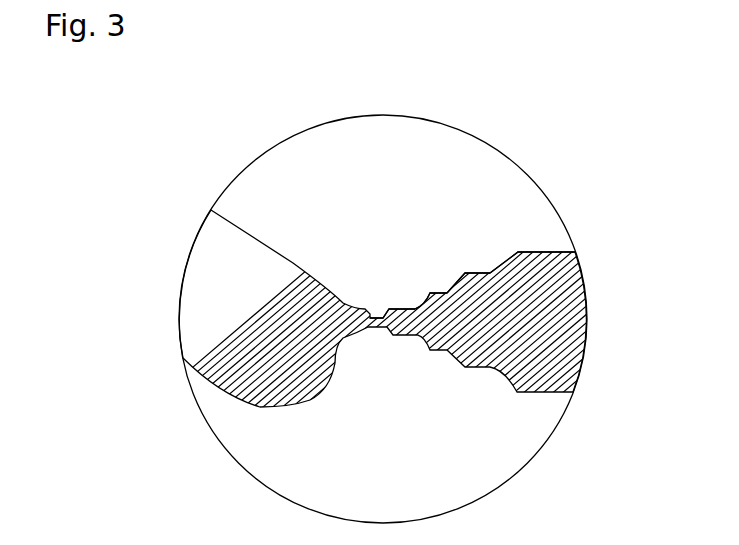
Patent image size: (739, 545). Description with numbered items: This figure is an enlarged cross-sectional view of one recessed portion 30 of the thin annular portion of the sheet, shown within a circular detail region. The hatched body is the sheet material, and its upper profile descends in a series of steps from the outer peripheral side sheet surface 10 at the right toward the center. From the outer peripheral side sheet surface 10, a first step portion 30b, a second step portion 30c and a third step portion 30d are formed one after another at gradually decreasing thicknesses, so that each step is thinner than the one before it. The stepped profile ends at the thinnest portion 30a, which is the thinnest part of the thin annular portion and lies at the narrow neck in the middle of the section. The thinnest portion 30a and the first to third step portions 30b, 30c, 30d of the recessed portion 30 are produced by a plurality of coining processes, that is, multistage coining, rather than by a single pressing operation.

The outer peripheral side sheet surface 10 is at (553, 250).
The recessed portion 30 is at (472, 378).
The thinnest portion 30a is at (380, 313).
The first step portion 30b is at (488, 273).
The second step portion 30c is at (450, 290).
The third step portion 30d is at (410, 308).